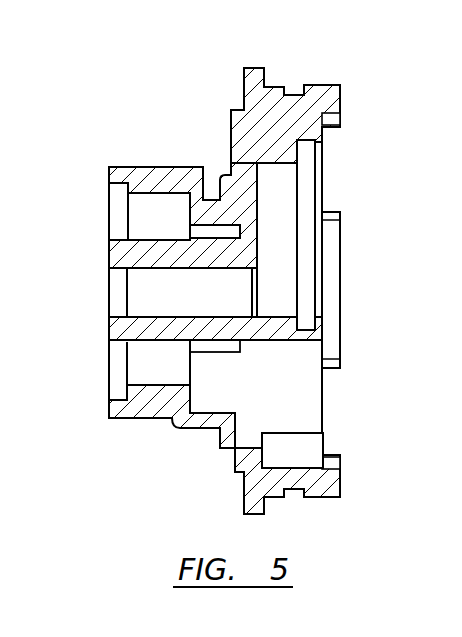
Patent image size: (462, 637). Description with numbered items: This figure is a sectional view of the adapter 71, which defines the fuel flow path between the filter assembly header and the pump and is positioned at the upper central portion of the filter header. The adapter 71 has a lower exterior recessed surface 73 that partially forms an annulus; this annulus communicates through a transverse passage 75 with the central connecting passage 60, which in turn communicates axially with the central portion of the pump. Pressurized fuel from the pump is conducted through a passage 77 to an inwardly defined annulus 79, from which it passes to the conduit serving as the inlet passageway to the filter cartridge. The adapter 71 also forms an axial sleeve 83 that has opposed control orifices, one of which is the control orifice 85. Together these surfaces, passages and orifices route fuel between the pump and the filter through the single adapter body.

The adapter 71 is at (160, 112).
The lower exterior recessed surface 73 is at (143, 421).
The transverse passage 75 is at (285, 196).
The passage 77 is at (247, 445).
The inwardly defined annulus 79 is at (152, 199).
The axial sleeve 83 is at (134, 253).
The control orifice 85 is at (126, 292).
The central connecting passage 60 is at (275, 320).